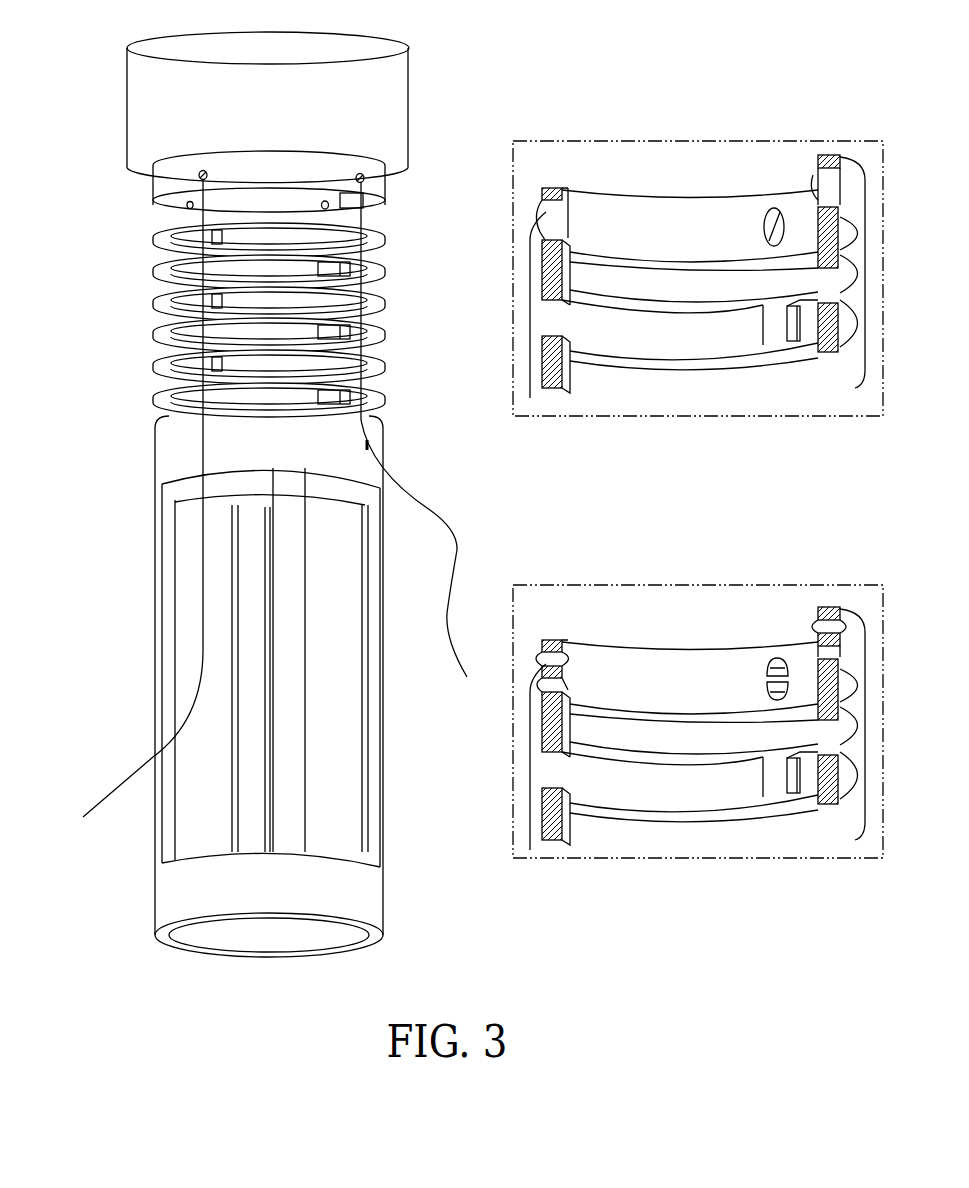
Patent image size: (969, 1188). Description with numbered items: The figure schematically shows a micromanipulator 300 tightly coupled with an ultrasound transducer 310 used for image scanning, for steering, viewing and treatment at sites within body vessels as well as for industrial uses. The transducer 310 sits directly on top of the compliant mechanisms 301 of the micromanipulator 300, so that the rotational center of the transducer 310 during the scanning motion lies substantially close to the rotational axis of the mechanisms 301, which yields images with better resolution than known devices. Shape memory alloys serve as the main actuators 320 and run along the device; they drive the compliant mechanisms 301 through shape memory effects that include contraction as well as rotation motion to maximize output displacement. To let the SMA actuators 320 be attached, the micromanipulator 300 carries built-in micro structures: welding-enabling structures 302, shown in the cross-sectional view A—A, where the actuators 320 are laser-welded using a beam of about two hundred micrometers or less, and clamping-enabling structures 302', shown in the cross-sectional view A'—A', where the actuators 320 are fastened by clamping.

The micromanipulator 300 is at (420, 925).
The compliant mechanisms 301 is at (107, 205).
The welding-enabling structures 302 is at (448, 186).
The clamping-enabling structures 302' is at (690, 615).
The ultrasound transducer 310 is at (140, 50).
The SMA actuators 320 is at (132, 773).